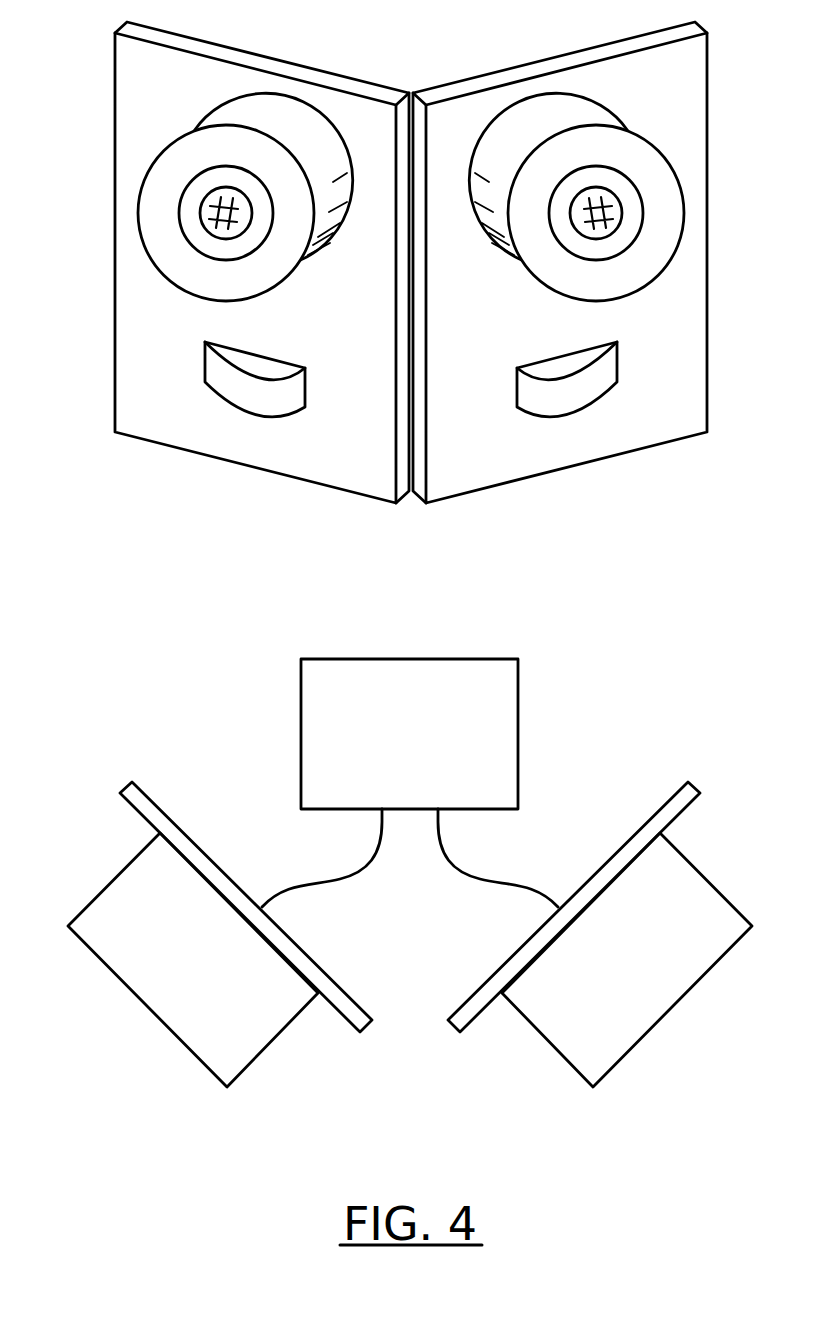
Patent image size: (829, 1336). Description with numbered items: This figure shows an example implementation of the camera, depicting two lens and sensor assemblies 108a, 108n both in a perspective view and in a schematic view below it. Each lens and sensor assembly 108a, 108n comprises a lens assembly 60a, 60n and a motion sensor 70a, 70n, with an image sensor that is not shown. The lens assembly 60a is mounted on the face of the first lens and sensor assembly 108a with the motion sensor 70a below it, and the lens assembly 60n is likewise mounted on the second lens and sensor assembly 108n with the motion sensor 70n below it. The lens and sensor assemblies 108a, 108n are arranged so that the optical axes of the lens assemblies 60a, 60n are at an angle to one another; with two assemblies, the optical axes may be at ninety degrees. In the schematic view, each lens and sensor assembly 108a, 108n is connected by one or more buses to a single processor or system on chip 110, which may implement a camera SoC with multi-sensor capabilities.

The first lens and sensor assembly 108a is at (115, 107).
The second lens and sensor assembly 108n is at (707, 107).
The lens assembly 60a is at (196, 290).
The lens assembly 60n is at (626, 290).
The motion sensor 70a is at (307, 381).
The motion sensor 70n is at (515, 381).
The system on chip (SoC) 110 is at (370, 658).